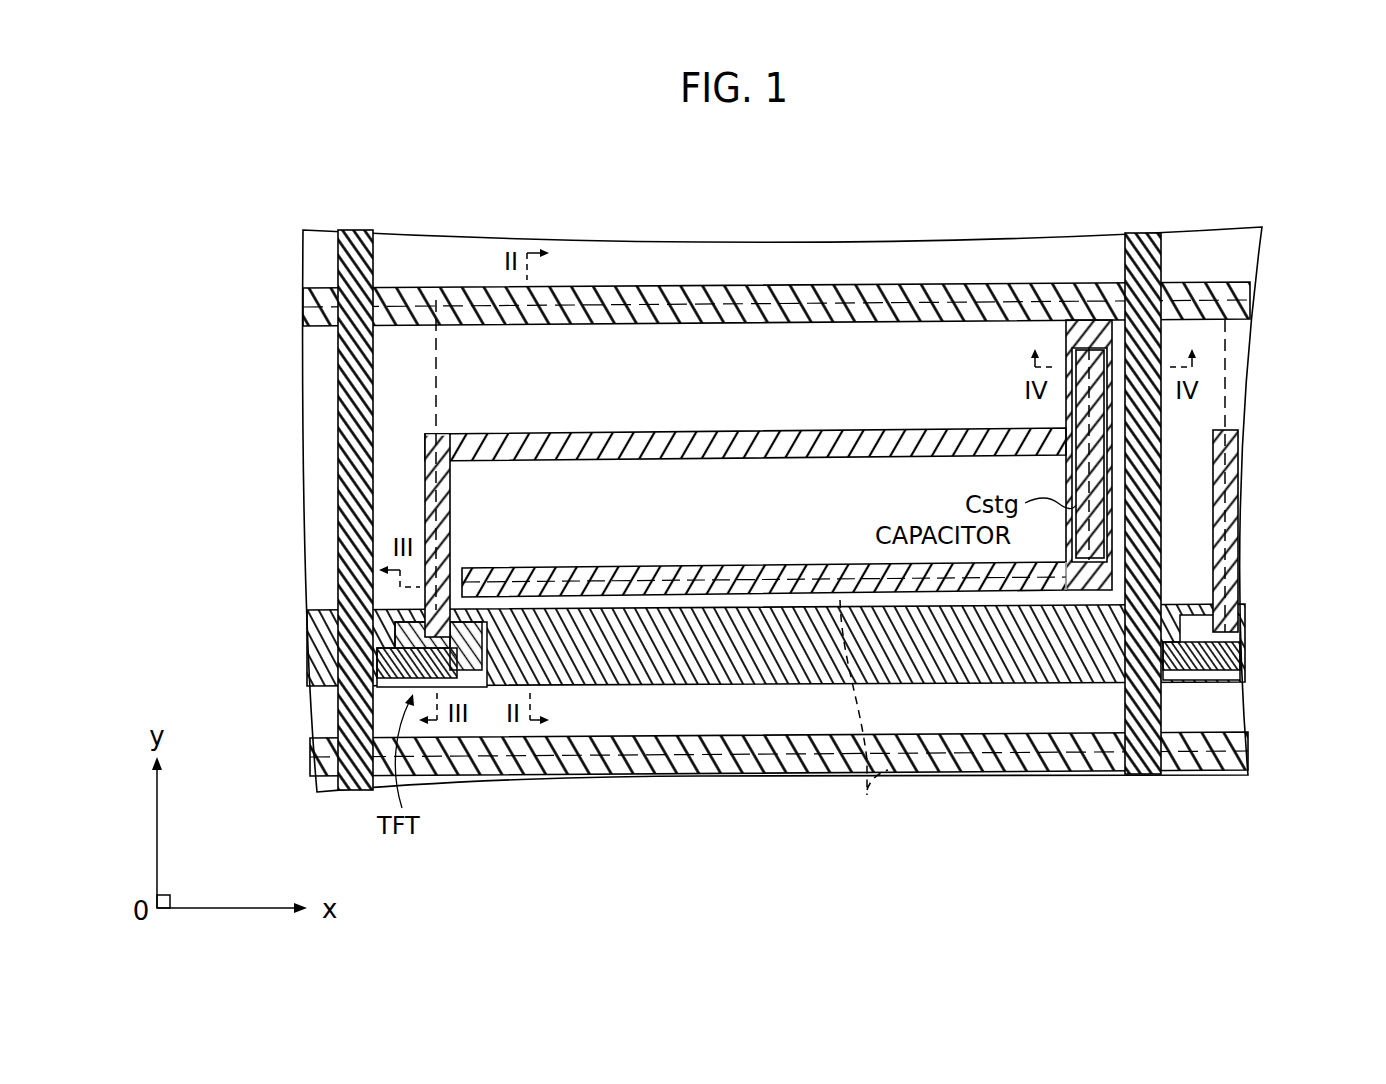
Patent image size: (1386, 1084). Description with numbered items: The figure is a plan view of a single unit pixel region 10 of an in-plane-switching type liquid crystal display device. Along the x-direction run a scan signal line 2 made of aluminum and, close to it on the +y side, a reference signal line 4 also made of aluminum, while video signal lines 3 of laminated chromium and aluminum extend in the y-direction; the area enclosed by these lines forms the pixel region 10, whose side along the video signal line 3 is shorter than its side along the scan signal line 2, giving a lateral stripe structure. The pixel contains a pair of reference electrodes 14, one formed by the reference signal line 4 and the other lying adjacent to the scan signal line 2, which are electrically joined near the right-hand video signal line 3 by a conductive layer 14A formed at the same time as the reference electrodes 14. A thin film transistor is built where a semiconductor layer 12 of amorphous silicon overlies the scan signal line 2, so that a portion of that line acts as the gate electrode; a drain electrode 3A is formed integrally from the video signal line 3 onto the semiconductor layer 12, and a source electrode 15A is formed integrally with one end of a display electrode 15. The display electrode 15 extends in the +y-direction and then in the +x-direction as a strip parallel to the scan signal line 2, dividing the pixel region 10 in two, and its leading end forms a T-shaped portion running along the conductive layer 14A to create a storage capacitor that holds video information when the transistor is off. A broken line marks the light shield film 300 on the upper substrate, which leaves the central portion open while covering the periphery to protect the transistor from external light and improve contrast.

The scan signal line 2 is at (983, 663).
The video signal line 3 is at (338, 400).
The drain electrode 3A is at (482, 668).
The reference signal line 4 is at (953, 290).
The unit pixel region 10 is at (1119, 157).
The semiconductor layer 12 is at (400, 648).
The reference electrode 14 is at (718, 580).
The conductive layer 14A is at (1162, 497).
The display electrode 15 is at (690, 432).
The source electrode 15A is at (403, 612).
The light shield film 300 is at (866, 713).